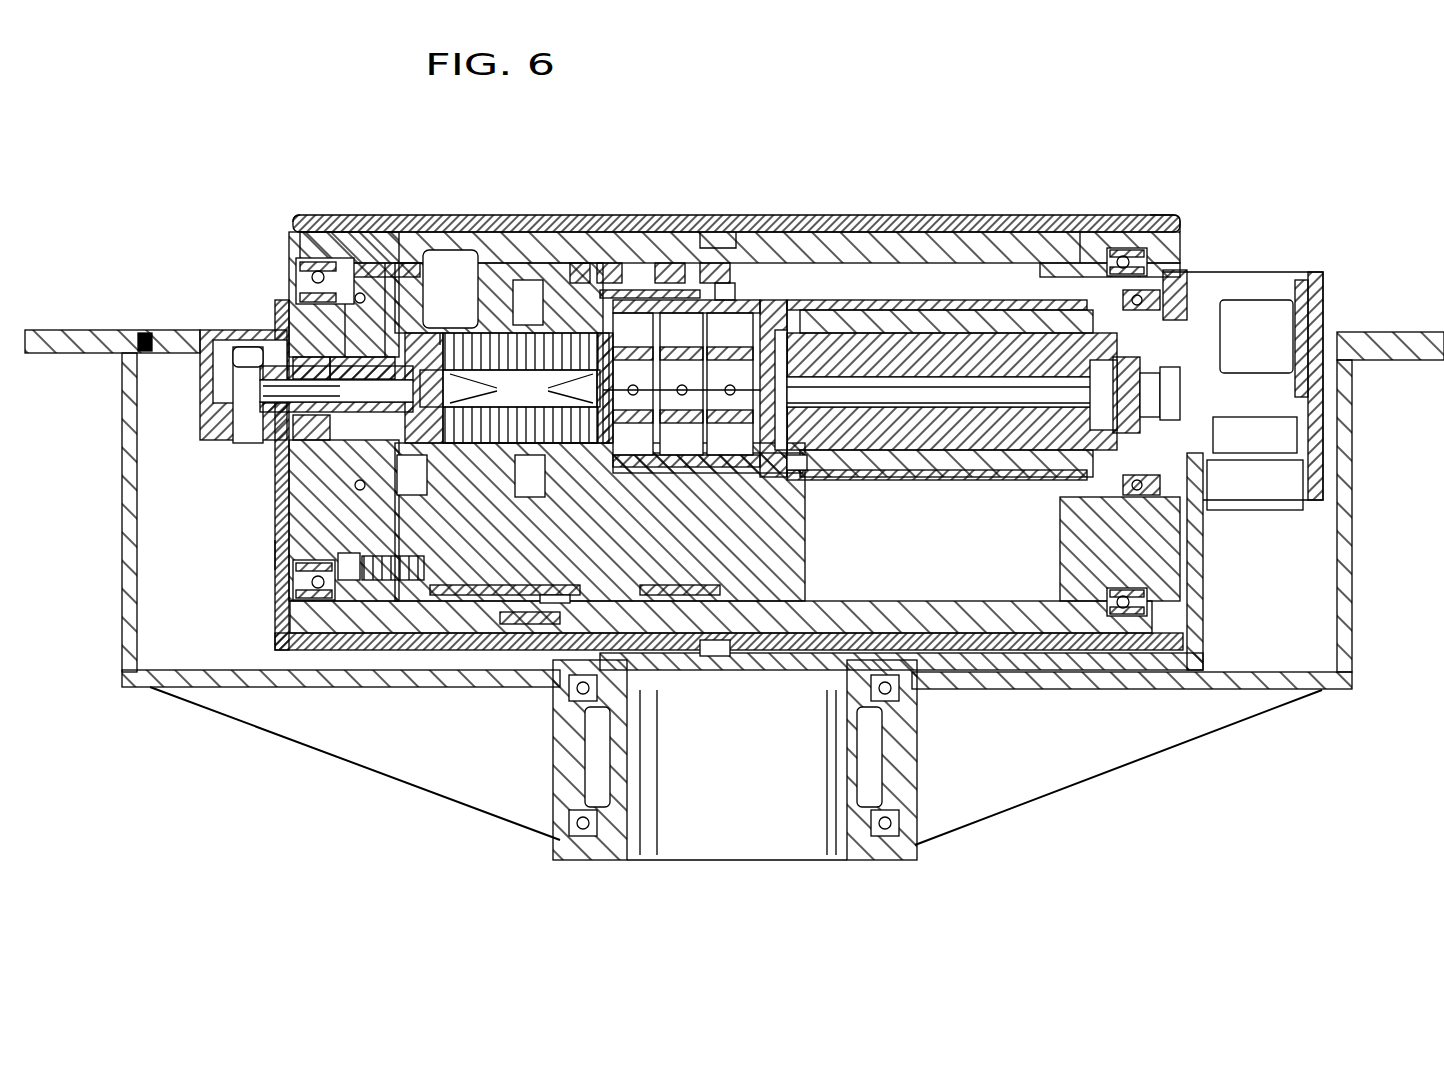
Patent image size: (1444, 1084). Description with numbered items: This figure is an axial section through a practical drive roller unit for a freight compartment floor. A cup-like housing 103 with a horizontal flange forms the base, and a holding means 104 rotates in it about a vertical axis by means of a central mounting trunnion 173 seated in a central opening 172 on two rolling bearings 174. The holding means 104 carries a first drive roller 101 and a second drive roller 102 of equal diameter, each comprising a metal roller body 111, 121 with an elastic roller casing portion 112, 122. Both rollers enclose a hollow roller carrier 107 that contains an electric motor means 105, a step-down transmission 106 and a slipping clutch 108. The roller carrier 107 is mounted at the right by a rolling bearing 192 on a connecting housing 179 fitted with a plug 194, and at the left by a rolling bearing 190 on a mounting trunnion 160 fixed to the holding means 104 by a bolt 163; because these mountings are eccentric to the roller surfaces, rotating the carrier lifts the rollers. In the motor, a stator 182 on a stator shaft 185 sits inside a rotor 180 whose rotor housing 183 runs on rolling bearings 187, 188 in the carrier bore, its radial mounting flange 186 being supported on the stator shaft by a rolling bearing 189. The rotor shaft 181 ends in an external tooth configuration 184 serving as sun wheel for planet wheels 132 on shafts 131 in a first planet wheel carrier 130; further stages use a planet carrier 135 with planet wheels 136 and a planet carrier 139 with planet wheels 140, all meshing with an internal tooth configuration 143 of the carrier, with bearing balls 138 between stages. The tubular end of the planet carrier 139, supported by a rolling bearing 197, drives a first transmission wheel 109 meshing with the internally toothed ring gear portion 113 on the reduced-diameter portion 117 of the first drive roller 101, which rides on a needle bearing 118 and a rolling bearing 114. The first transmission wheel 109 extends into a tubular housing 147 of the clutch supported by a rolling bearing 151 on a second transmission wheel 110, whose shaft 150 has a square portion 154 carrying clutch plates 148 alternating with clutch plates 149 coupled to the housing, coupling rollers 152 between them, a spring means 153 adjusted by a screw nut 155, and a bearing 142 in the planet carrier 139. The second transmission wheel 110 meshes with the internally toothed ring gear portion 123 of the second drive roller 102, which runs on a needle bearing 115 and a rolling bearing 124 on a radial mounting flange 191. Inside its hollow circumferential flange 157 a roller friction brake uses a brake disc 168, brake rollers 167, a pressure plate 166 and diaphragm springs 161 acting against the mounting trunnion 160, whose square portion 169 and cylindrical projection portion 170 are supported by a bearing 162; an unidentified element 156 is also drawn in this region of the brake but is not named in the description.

The first drive roller 101 is at (1175, 212).
The second drive roller 102 is at (305, 212).
The housing 103 is at (158, 688).
The holding means 104 is at (272, 636).
The electric motor means 105 is at (947, 325).
The step-down transmission 106 is at (733, 278).
The roller carrier 107 is at (995, 262).
The slipping clutch 108 is at (502, 600).
The first transmission wheel 109 is at (540, 330).
The second transmission wheel 110 is at (366, 262).
The roller body 111 is at (1082, 245).
The roller casing portion 112 is at (1130, 240).
The internally toothed ring gear portion 113 is at (527, 212).
The rolling bearing 114 is at (1160, 262).
The needle bearing 115 is at (640, 265).
The reduced-diameter portion 117 is at (548, 632).
The needle bearing 118 is at (648, 262).
The roller body 121 is at (288, 262).
The roller casing portion 122 is at (293, 235).
The internally toothed ring gear portion 123 is at (372, 622).
The rolling bearing 124 is at (300, 270).
The first planet wheel carrier 130 is at (760, 470).
The shafts 131 is at (768, 300).
The planet wheels 132 is at (708, 262).
The planet carrier 135 is at (726, 470).
The planet wheels 136 is at (668, 262).
The bearing ball 138 is at (800, 470).
The planet carrier 139 is at (668, 475).
The planet wheels 140 is at (612, 262).
The bearing 142 is at (600, 522).
The internal tooth configuration 143 is at (704, 560).
The tubular housing 147 is at (483, 288).
The clutch plates 148 is at (478, 330).
The clutch plates 149 is at (507, 458).
The shaft 150 is at (514, 475).
The rolling bearing 151 is at (386, 262).
The coupling rollers 152 is at (500, 330).
The spring means 153 is at (430, 448).
The square portion 154 is at (510, 390).
The screw nut 155 is at (413, 262).
The end plate 156 is at (345, 262).
The hollow circumferential flange 157 is at (290, 335).
The mounting trunnion 160 is at (215, 395).
The diaphragm springs 161 is at (290, 470).
The bearing 162 is at (344, 520).
The bolt 163 is at (215, 345).
The pressure plate 166 is at (300, 490).
The brake rollers 167 is at (300, 515).
The brake disc 168 is at (296, 330).
The square portion 169 is at (240, 420).
The cylindrical projection portion 170 is at (450, 345).
The central opening 172 is at (880, 778).
The mounting trunnion 173 is at (617, 855).
The rolling bearings 174 is at (577, 835).
The connecting housing 179 is at (1255, 272).
The rotor 180 is at (853, 333).
The rotor shaft 181 is at (790, 480).
The stator 182 is at (880, 455).
The rotor housing 183 is at (897, 300).
The external tooth configuration 184 is at (952, 392).
The stator shaft 185 is at (925, 412).
The radial mounting flange 186 is at (780, 300).
The rolling bearing 187 is at (787, 330).
The rolling bearing 188 is at (1028, 290).
The rolling bearing 189 is at (838, 468).
The rolling bearing 190 is at (232, 340).
The radial mounting flange 191 is at (250, 557).
The rolling bearing 192 is at (1150, 320).
The plug 194 is at (1303, 510).
The rolling bearing 197 is at (582, 262).